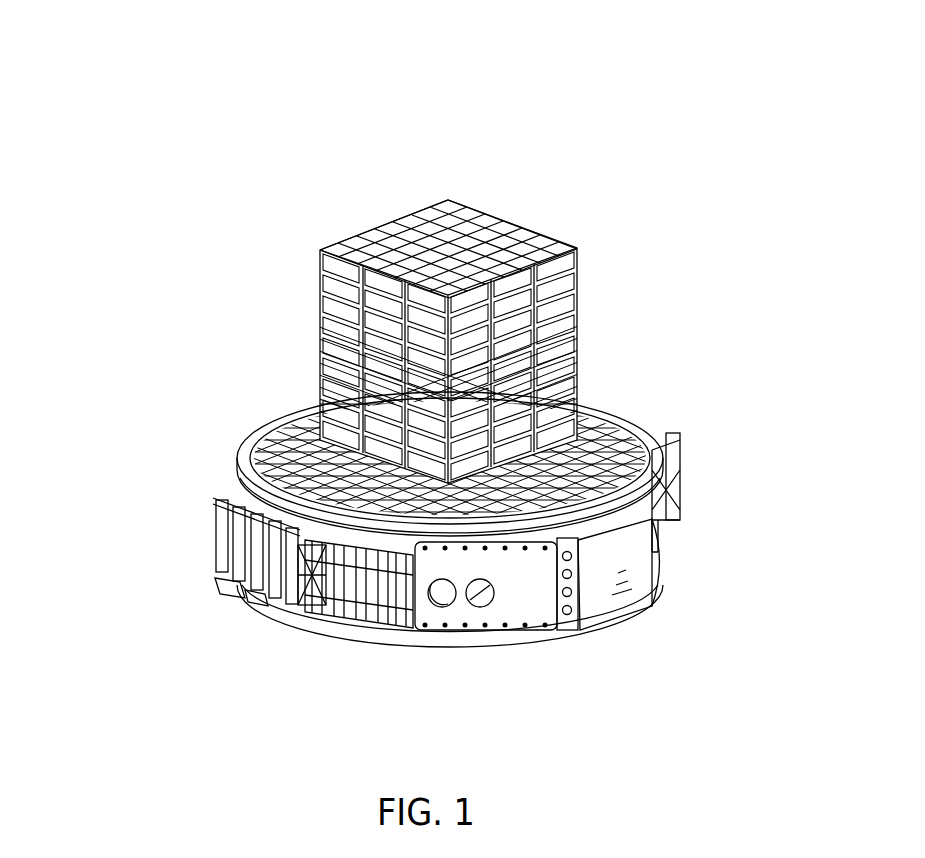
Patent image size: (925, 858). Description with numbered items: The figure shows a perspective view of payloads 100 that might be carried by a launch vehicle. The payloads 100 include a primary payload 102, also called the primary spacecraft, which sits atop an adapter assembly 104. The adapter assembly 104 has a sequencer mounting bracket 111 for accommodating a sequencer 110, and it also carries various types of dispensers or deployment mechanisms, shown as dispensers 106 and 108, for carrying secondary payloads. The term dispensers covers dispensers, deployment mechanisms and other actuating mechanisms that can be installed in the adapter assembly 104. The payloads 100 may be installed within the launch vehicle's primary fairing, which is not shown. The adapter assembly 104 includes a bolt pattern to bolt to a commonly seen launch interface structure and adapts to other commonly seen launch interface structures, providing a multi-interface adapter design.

The payloads 100 is at (88, 75).
The primary payload 102 is at (578, 268).
The adapter assembly 104 is at (240, 420).
The dispenser 106 is at (217, 523).
The dispenser 108 is at (352, 610).
The sequencer 110 is at (568, 623).
The sequencer mounting bracket 111 is at (633, 545).